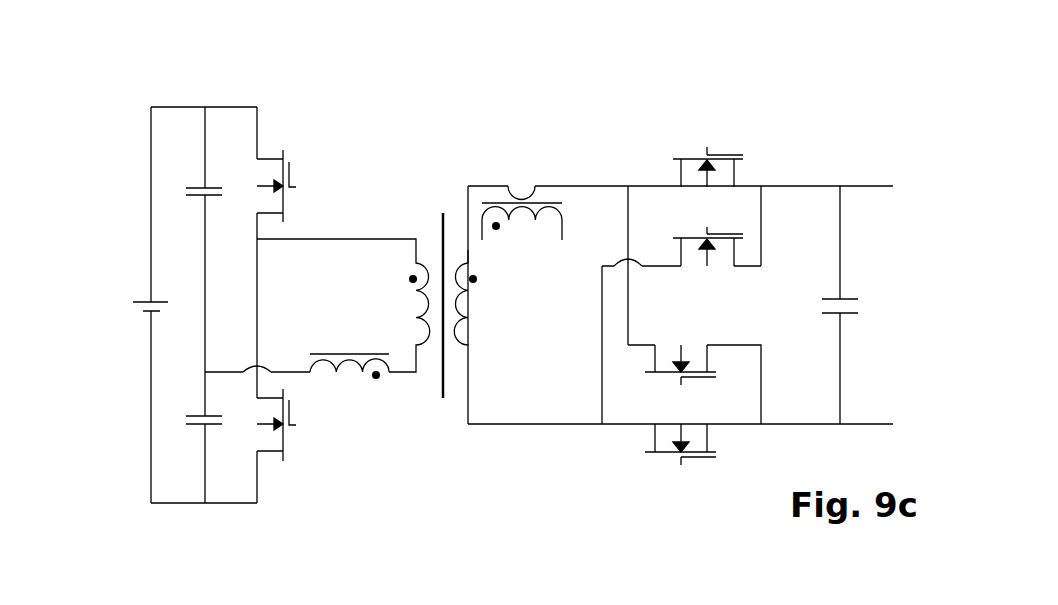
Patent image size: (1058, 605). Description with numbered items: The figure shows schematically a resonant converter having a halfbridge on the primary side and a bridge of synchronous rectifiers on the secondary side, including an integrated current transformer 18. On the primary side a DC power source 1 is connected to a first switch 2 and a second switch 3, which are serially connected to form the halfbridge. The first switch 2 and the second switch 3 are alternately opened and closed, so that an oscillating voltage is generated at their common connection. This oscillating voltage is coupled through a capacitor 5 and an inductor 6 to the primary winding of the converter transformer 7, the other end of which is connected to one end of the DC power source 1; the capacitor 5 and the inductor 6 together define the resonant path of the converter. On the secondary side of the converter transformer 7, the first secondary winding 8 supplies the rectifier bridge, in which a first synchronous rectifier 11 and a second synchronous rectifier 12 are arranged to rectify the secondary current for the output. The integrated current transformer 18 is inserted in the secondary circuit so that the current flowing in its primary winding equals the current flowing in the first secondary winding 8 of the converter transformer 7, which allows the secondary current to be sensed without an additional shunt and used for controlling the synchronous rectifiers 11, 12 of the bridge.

The DC power source 1 is at (133, 296).
The first switch 2 is at (253, 171).
The second switch 3 is at (258, 438).
The capacitor 5 is at (178, 188).
The inductor 6 is at (349, 372).
The converter transformer 7 is at (426, 222).
The first secondary winding 8 is at (467, 252).
The first synchronous rectifier 11 is at (675, 104).
The second synchronous rectifier 12 is at (647, 508).
The integrated current transformer 18 is at (504, 150).